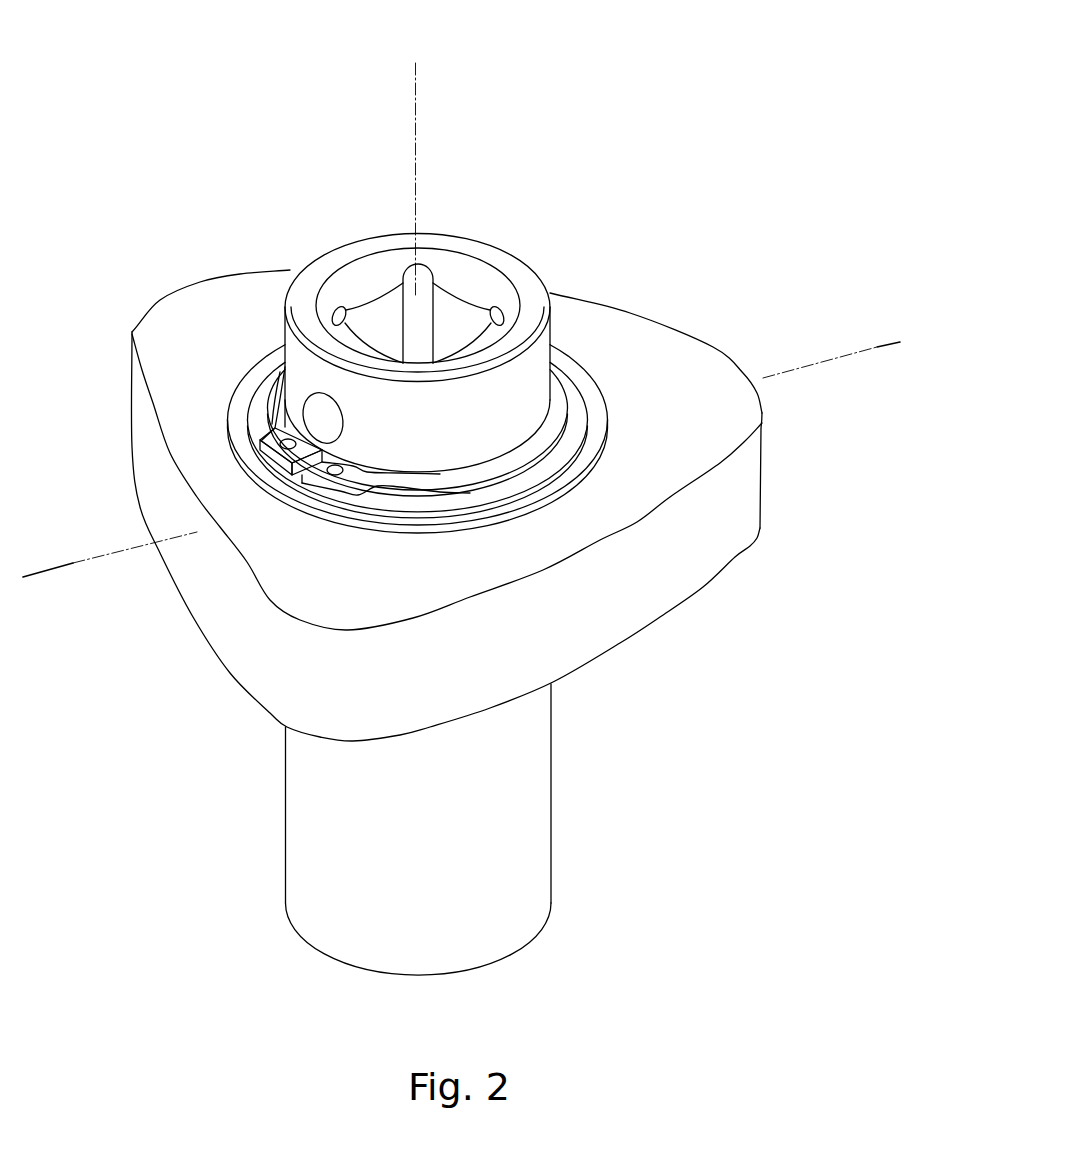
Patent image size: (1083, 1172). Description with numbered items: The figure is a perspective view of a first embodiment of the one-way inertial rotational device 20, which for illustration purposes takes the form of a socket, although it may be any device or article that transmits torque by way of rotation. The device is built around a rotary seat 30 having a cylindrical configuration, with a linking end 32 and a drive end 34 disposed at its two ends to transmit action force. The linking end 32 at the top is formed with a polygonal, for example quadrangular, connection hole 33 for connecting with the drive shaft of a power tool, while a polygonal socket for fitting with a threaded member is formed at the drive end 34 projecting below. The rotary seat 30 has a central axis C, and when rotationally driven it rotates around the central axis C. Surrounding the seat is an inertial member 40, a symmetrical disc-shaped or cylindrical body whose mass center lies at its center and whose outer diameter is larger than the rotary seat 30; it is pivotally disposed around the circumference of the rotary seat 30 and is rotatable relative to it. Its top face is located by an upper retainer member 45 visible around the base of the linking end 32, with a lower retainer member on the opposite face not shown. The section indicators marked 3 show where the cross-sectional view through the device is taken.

The one-way inertial rotational device 20 is at (733, 128).
The rotary seat 30 is at (471, 242).
The linking end 32 is at (522, 263).
The connection hole 33 is at (382, 322).
The drive end 34 is at (285, 813).
The inertial member 40 is at (718, 345).
The upper retainer member 45 is at (545, 445).
The section line 3- 3 is at (880, 350).
The central axis C is at (415, 160).